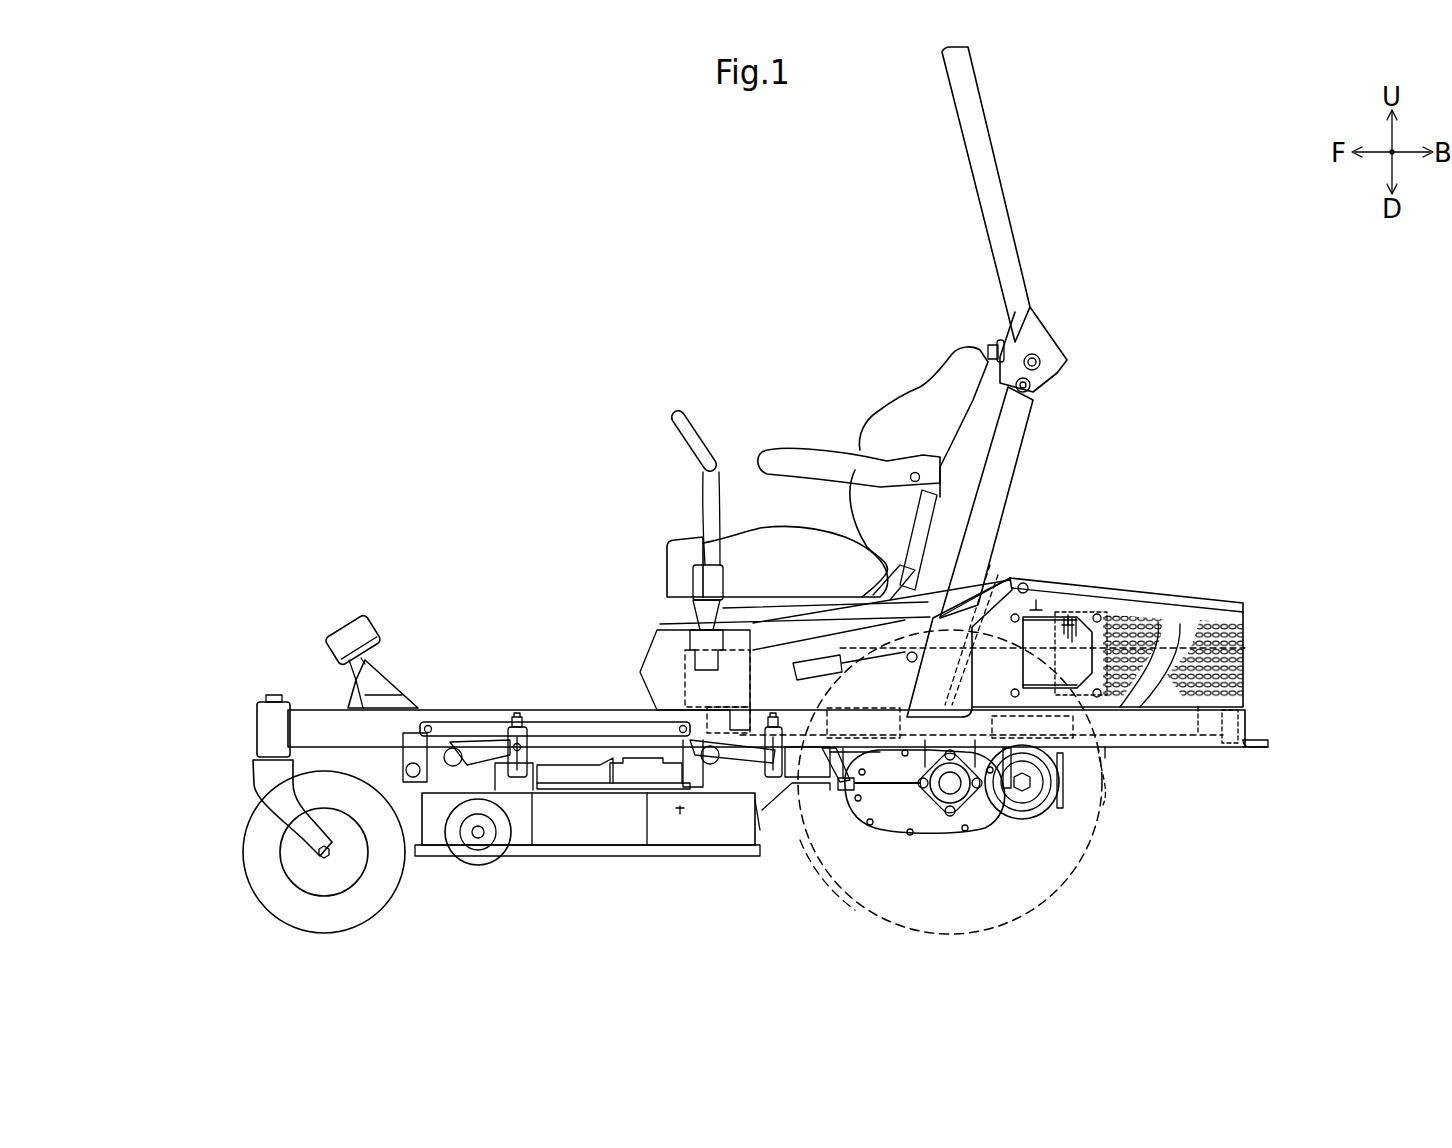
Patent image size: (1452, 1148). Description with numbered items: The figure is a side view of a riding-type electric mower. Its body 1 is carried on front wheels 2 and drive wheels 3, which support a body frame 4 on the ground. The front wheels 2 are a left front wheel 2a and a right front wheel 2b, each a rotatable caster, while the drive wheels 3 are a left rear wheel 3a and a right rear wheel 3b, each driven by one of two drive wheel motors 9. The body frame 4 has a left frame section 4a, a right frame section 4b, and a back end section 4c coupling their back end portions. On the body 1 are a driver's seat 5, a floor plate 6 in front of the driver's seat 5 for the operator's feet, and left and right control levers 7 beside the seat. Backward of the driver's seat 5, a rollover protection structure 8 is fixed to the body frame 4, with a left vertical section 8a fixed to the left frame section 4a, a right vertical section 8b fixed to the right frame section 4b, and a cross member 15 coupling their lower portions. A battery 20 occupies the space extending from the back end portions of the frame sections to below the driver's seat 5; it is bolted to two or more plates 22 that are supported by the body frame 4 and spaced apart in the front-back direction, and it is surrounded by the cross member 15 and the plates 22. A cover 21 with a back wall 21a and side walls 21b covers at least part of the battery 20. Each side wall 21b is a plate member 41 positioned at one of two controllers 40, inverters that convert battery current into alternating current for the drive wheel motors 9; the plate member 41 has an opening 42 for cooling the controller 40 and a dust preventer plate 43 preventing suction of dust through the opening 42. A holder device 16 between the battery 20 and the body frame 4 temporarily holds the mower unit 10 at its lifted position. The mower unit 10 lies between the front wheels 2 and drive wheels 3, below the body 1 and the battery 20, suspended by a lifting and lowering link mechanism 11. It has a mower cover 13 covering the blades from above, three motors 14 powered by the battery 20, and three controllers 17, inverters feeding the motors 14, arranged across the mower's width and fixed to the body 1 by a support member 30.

The body 1 is at (492, 588).
The front wheels 2 is at (262, 846).
The left front wheel 2a is at (262, 846).
The right front wheel 2b is at (243, 852).
The drive wheels 3 is at (899, 787).
The left rear wheel 3a is at (899, 787).
The right rear wheel 3b is at (855, 906).
The body frame 4 is at (318, 704).
The left frame section 4a is at (1127, 814).
The right frame section 4b is at (1103, 805).
The back end section 4c is at (1236, 748).
The driver's seat 5 is at (897, 415).
The floor plate 6 is at (405, 700).
The control levers 7 is at (692, 442).
The rollover protection structure (ROPS) 8 is at (1013, 190).
The left vertical section 8a is at (1017, 552).
The right vertical section 8b is at (1005, 467).
The drive wheel motors 9 is at (970, 822).
The mower unit 10 is at (580, 868).
The lifting and lowering link mechanism 11 is at (596, 725).
The mower cover 13 is at (682, 812).
The motors 14 is at (572, 776).
The cross member 15 is at (986, 612).
The holder device 16 is at (808, 627).
The controllers 17 is at (814, 790).
The battery 20 is at (1132, 738).
The cover 21 is at (1252, 630).
The back wall 21a is at (1248, 672).
The side wall 21b is at (1157, 625).
The plates 22 is at (773, 707).
The support member 30 is at (791, 786).
The controllers 40 is at (1038, 670).
The plate member 41 is at (1036, 610).
The opening 42 is at (1068, 625).
The dust preventer plate 43 is at (1090, 625).